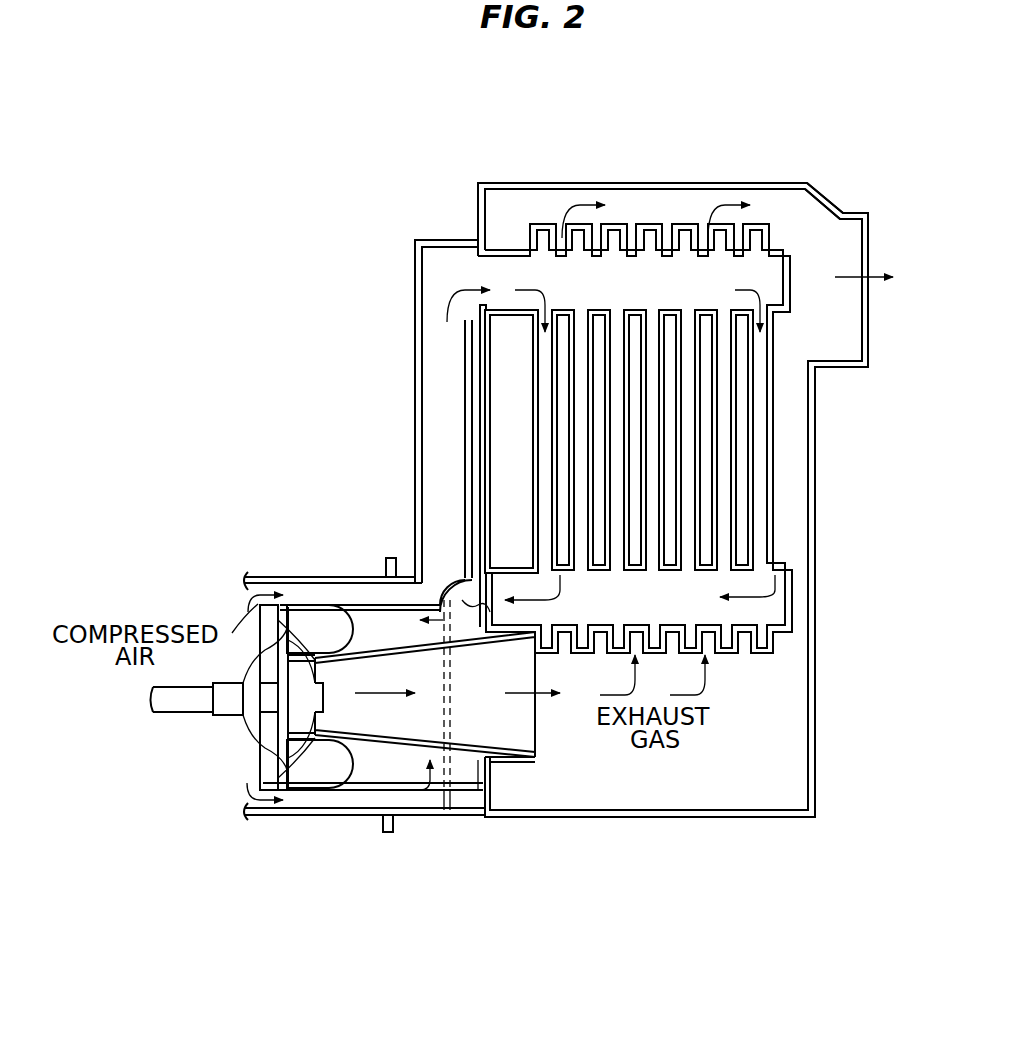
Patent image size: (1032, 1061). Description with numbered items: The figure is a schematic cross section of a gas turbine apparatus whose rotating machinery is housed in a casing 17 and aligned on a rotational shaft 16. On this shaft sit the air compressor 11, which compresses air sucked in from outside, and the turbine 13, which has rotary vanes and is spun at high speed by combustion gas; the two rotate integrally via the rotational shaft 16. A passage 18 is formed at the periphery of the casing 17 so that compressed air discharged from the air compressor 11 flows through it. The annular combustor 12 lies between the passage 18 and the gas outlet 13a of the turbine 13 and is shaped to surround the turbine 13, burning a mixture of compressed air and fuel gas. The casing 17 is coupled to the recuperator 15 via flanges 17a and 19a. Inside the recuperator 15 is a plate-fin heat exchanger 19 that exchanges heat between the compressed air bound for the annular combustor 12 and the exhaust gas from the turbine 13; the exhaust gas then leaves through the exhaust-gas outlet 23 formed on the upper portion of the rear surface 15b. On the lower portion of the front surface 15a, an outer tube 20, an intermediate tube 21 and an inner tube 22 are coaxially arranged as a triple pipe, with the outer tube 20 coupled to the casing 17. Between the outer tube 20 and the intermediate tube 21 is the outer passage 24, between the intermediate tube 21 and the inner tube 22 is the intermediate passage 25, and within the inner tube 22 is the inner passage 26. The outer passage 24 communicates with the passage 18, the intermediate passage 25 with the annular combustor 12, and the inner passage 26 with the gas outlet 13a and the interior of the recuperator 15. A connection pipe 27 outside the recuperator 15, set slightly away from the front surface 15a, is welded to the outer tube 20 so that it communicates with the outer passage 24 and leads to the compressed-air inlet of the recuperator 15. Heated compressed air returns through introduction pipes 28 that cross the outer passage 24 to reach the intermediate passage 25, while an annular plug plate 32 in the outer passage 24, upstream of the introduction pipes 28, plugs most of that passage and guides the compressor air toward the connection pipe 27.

The air compressor 11 is at (248, 718).
The annular combustor 12 is at (320, 770).
The turbine 13 is at (258, 728).
The gas outlet 13a is at (296, 790).
The recuperator 15 is at (672, 183).
The front surface 15a is at (485, 371).
The rear surface 15b is at (815, 462).
The rotational shaft 16 is at (180, 704).
The casing 17 is at (262, 577).
The flange 17a is at (360, 815).
The passage 18 is at (308, 583).
The plate-fin heat exchanger 19 is at (780, 228).
The flange 19a is at (390, 832).
The outer tube 20 is at (440, 812).
The intermediate tube 21 is at (478, 790).
The inner tube 22 is at (386, 632).
The exhaust-gas outlet 23 is at (857, 213).
The outer passage 24 is at (392, 558).
The intermediate passage 25 is at (375, 628).
The inner passage 26 is at (514, 740).
The connection pipe 27 is at (415, 300).
The introduction pipe 28 is at (460, 582).
The plug plate 32 is at (448, 812).